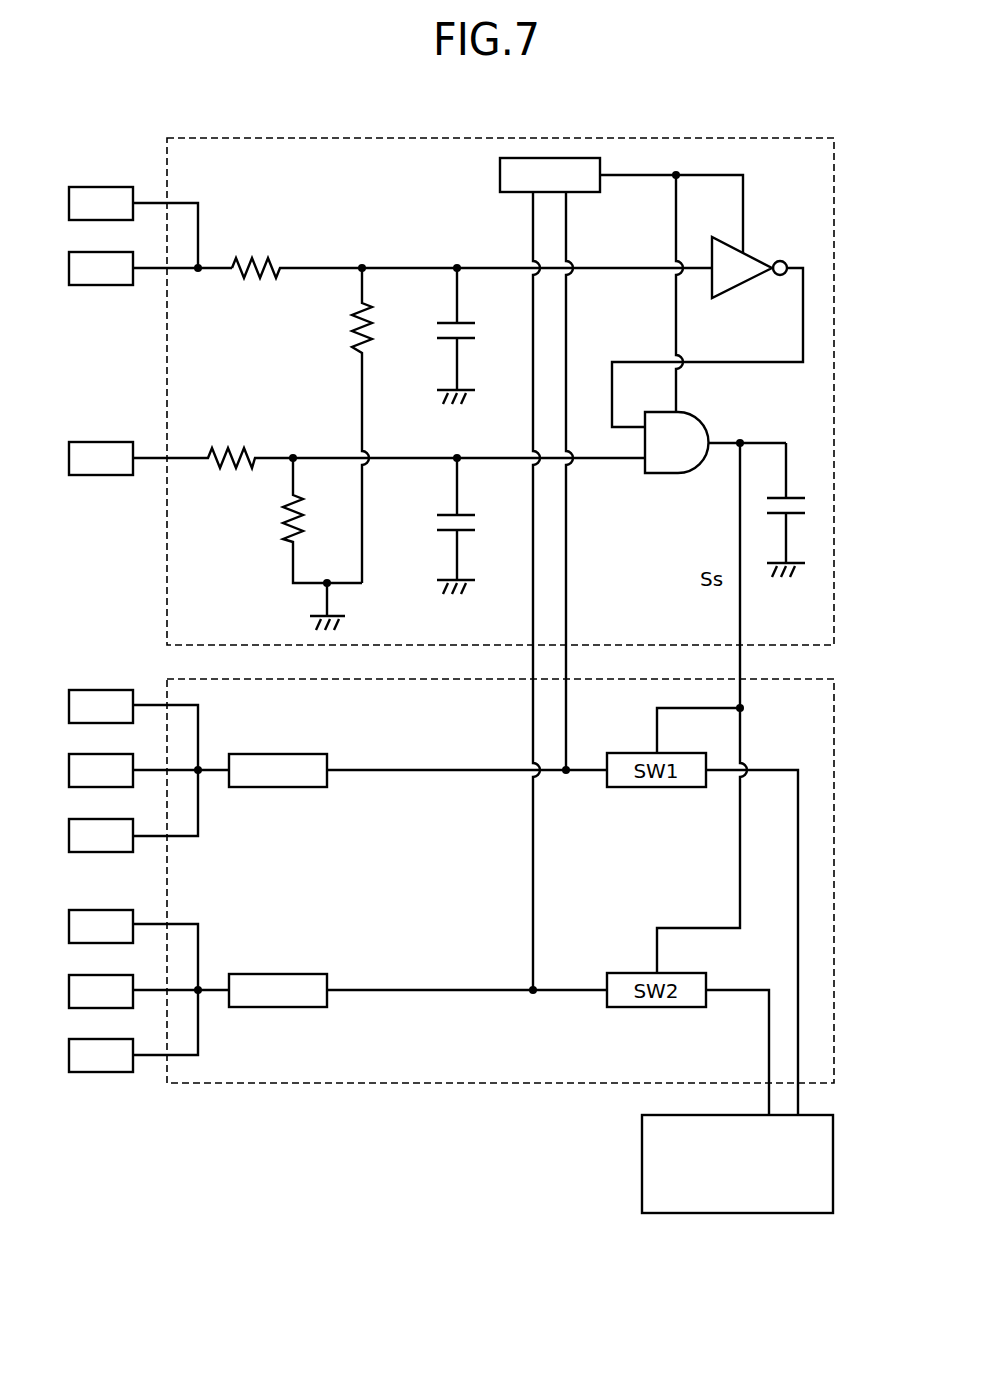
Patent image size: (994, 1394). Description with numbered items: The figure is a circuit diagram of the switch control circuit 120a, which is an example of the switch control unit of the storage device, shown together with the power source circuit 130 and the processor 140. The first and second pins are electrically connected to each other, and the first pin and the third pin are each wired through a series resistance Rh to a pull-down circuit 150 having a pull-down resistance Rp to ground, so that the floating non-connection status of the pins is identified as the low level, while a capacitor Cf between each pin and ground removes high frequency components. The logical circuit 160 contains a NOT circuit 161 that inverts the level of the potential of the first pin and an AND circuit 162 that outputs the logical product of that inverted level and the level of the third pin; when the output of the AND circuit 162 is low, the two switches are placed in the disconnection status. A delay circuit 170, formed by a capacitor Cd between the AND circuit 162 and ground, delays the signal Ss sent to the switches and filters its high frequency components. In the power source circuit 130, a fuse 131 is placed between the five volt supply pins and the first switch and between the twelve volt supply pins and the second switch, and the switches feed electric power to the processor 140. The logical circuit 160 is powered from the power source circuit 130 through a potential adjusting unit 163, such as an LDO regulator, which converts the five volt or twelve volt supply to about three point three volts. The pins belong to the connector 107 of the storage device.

The connector terminals (pins P1-P15) 107 is at (104, 156).
The switch control circuit 120a is at (738, 138).
The power source circuit 130 is at (277, 1084).
The fuse 131 is at (276, 754).
The processor 140 is at (642, 1166).
The pull-down circuit 150 is at (315, 288).
The logical circuit 160 is at (757, 355).
The NOT circuit 161 is at (758, 256).
The AND circuit 162 is at (668, 474).
The potential adjusting unit 163 is at (550, 158).
The delay circuit 170 is at (806, 521).